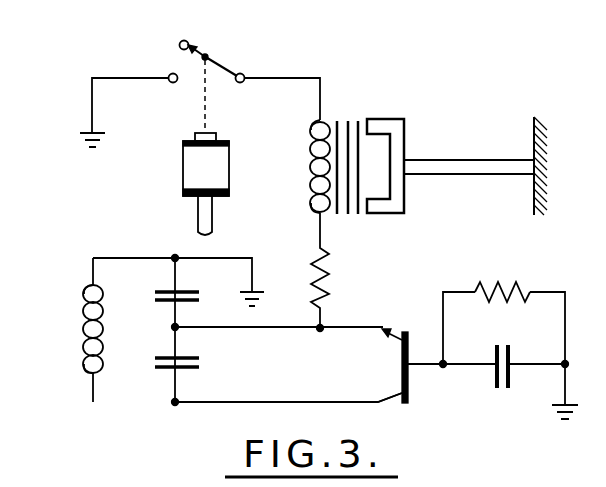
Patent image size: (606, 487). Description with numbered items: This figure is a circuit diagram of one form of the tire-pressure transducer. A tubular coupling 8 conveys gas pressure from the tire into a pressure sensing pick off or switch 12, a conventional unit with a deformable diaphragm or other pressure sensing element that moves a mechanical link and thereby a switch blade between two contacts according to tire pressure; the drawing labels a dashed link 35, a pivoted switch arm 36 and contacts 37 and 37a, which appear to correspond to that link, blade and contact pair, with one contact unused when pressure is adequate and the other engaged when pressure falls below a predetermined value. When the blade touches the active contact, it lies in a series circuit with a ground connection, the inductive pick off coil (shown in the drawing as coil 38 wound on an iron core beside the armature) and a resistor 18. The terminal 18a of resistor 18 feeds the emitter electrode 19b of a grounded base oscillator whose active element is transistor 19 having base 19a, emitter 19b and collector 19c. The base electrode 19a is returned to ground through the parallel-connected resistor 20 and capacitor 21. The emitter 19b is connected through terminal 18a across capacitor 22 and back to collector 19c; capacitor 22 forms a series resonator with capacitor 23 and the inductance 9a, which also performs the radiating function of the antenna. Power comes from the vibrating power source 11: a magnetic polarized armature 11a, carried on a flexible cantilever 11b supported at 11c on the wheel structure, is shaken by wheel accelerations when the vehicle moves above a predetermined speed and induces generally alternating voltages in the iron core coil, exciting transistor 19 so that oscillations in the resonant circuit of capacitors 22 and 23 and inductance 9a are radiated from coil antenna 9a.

The tubular coupling 8 is at (213, 208).
The inductance 9a is at (83, 284).
The power source 11 is at (458, 146).
The magnetic polarized armature 11a is at (390, 122).
The flexible cantilever 11b is at (455, 176).
The support 11c is at (536, 128).
The pressure sensing pick off or switch 12 is at (183, 177).
The resistor 18 is at (331, 282).
The terminal 18a is at (323, 325).
The transistor 19 is at (407, 324).
The base electrode 19a is at (409, 372).
The emitter electrode 19b is at (394, 338).
The collector electrode 19c is at (393, 400).
The resistor 20 is at (505, 288).
The capacitor 21 is at (510, 347).
The capacitor 22 is at (199, 365).
The capacitor 23 is at (160, 290).
The mechanical linkage 35 is at (207, 96).
The switch arm 36 is at (220, 66).
The switch contact 37 is at (176, 70).
The switch contact 37a is at (173, 83).
The coil 38 is at (337, 116).